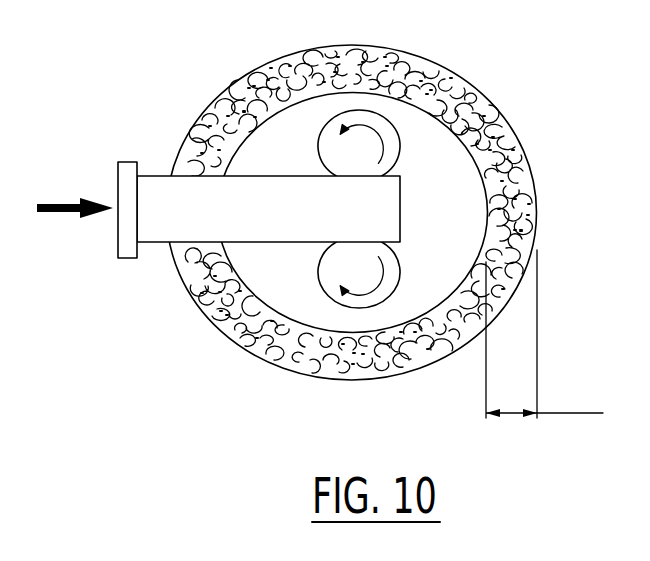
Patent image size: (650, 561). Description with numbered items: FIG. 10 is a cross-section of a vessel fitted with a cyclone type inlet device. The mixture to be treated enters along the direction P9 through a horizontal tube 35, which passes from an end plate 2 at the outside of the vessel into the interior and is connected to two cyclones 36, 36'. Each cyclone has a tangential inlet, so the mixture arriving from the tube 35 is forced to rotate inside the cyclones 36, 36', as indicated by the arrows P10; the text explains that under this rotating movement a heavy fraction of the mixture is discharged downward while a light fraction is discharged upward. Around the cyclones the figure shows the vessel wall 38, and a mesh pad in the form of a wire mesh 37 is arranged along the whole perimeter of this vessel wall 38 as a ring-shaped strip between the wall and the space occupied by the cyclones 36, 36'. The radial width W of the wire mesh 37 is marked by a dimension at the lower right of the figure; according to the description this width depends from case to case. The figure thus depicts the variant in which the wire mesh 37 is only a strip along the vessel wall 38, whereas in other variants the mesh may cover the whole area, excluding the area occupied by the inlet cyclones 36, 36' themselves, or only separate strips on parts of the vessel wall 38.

The end plate 2 is at (127, 258).
The horizontal tube 35 is at (197, 193).
The cyclone 36 is at (398, 103).
The cyclone 36' is at (374, 334).
The wire mesh 37 is at (260, 348).
The vessel wall 38 is at (521, 142).
The pressure / feed direction P9 is at (75, 196).
The rotation of the mixture P10 is at (361, 210).
The width of the wire mesh W is at (544, 334).